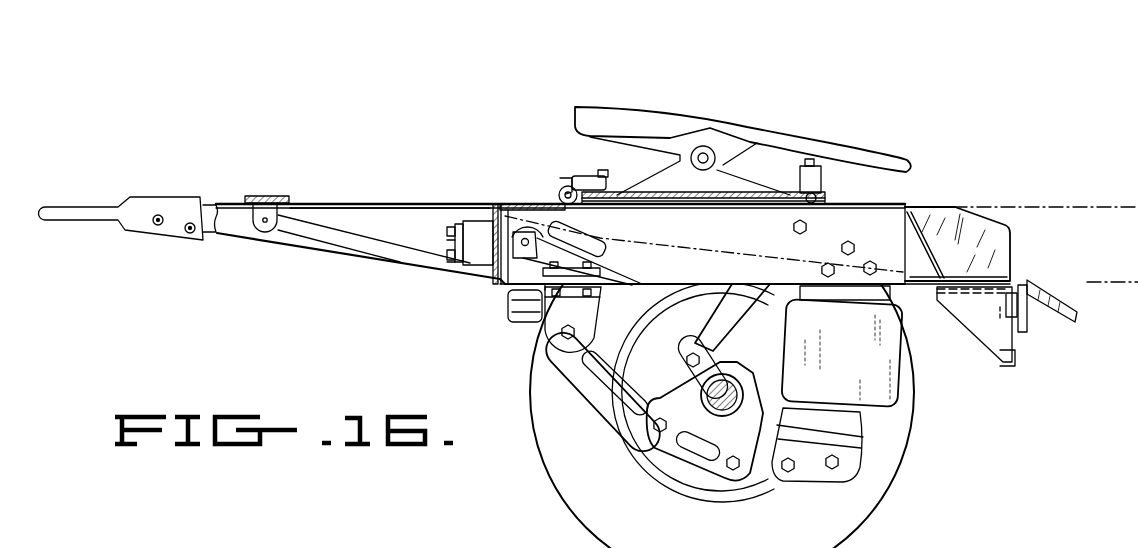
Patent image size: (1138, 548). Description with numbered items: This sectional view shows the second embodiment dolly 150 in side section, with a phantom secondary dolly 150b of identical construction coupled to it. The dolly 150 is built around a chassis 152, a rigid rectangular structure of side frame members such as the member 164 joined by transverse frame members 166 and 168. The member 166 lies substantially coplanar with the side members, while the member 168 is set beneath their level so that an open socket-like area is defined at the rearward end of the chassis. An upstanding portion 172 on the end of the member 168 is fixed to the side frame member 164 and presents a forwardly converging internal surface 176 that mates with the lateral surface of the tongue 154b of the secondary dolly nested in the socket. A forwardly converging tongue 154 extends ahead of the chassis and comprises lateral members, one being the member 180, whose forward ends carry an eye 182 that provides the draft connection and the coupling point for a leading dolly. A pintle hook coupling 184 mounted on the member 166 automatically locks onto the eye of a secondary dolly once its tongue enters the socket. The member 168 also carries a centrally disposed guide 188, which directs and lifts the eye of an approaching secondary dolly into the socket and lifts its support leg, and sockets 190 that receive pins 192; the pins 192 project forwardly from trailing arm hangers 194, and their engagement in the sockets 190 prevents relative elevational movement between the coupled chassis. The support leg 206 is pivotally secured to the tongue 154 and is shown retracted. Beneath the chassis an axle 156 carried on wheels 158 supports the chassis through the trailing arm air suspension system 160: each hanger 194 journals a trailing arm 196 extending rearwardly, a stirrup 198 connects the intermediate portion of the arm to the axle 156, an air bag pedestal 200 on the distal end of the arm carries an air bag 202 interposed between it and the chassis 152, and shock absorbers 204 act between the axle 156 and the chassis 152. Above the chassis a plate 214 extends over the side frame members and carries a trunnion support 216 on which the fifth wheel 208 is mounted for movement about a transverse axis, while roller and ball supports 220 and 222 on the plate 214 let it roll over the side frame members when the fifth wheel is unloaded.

The dolly 150 is at (455, 181).
The secondary dolly 150b is at (1131, 204).
The chassis 152 is at (928, 204).
The tongue 154 is at (318, 201).
The tongue of the secondary dolly 154b is at (906, 204).
The axle 156 is at (730, 380).
The wheels 158 is at (886, 484).
The trailing arm air suspension system 160 is at (576, 388).
The side frame member 164 is at (638, 225).
The transverse frame member 166 is at (492, 272).
The transverse frame member 168 is at (1010, 362).
The upstanding portion 172 is at (983, 216).
The forwardly converging internal surface 176 is at (988, 246).
The lateral member 180 is at (388, 202).
The eye 182 is at (75, 203).
The pintle hook coupling 184 is at (479, 205).
The guide 188 is at (1052, 287).
The sockets 190 is at (1030, 315).
The pins 192 is at (517, 320).
The trailing arm hangers 194 is at (593, 317).
The trailing arm 196 is at (608, 400).
The stirrup 198 is at (733, 473).
The air bag pedestal 200 is at (823, 478).
The air bag 202 is at (893, 342).
The shock absorbers 204 is at (688, 344).
The support leg 206 is at (357, 243).
The fifth wheel 208 is at (802, 133).
The plate 214 is at (722, 196).
The trunnion support 216 is at (747, 186).
The roller support 220 is at (588, 176).
The ball support 222 is at (818, 168).